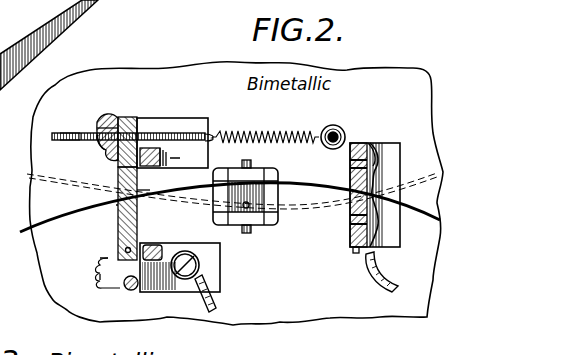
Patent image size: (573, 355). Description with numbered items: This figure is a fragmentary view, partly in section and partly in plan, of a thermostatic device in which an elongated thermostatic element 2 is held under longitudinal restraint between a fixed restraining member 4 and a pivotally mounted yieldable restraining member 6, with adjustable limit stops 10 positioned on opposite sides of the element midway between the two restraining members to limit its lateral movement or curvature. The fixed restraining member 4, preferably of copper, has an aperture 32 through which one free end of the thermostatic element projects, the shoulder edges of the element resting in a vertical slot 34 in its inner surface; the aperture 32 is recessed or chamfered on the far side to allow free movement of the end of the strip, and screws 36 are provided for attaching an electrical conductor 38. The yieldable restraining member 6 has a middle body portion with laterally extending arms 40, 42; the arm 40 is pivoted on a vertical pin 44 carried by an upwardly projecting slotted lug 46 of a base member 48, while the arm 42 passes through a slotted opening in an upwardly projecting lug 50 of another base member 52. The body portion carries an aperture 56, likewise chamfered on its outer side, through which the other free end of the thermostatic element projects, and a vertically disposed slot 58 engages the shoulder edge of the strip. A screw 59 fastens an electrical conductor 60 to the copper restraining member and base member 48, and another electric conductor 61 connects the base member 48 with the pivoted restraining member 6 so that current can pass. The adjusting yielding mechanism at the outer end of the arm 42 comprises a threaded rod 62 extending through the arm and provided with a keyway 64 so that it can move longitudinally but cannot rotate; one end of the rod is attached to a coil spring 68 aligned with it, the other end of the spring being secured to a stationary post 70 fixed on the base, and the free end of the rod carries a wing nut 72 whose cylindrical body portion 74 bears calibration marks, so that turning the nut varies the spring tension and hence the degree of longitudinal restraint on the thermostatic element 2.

The thermostatic element 2 is at (376, 94).
The fixed restraining member 4 is at (354, 249).
The pivotally mounted yieldable restraining member 6 is at (113, 182).
The adjustable limit stops 10 is at (256, 167).
The aperture 32 is at (378, 170).
The vertical slot 34 is at (348, 203).
The screws 36 is at (376, 146).
The electrical conductor 38 is at (380, 283).
The arm 40 is at (139, 232).
The arm 42 is at (138, 125).
The pin 44 is at (124, 250).
The slotted lug 46 is at (153, 246).
The base member 48 is at (212, 278).
The lug 50 is at (171, 156).
The base member 52 is at (190, 124).
The aperture 56 is at (118, 214).
The vertically disposed slot 58 is at (138, 196).
The screw 59 is at (199, 261).
The electrical conductor 60 is at (216, 298).
The electric conductor 61 is at (102, 275).
The threaded rod 62 is at (72, 131).
The keyway 64 is at (52, 136).
The coil spring 68 is at (264, 132).
The stationary post 70 is at (337, 127).
The wing nut 72 is at (100, 120).
The cylindrical body portion 74 is at (122, 120).